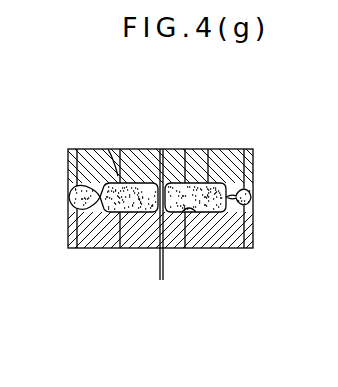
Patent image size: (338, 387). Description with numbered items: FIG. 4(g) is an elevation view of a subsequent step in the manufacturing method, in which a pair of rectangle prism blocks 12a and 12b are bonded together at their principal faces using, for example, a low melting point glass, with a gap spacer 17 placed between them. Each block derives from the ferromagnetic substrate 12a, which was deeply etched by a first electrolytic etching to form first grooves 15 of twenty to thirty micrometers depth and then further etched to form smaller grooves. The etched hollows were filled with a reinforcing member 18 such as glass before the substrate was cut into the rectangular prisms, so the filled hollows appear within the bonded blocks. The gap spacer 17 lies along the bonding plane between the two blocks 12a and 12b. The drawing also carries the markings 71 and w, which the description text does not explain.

The ferromagnetic substrate 12a is at (67, 240).
The rectangle prism block 12b is at (68, 149).
The first grooves 15 is at (205, 214).
The gap spacer 17 is at (68, 197).
The reinforcing member 18 is at (108, 149).
The gap spacer layer 71 is at (200, 149).
The track width w is at (184, 275).